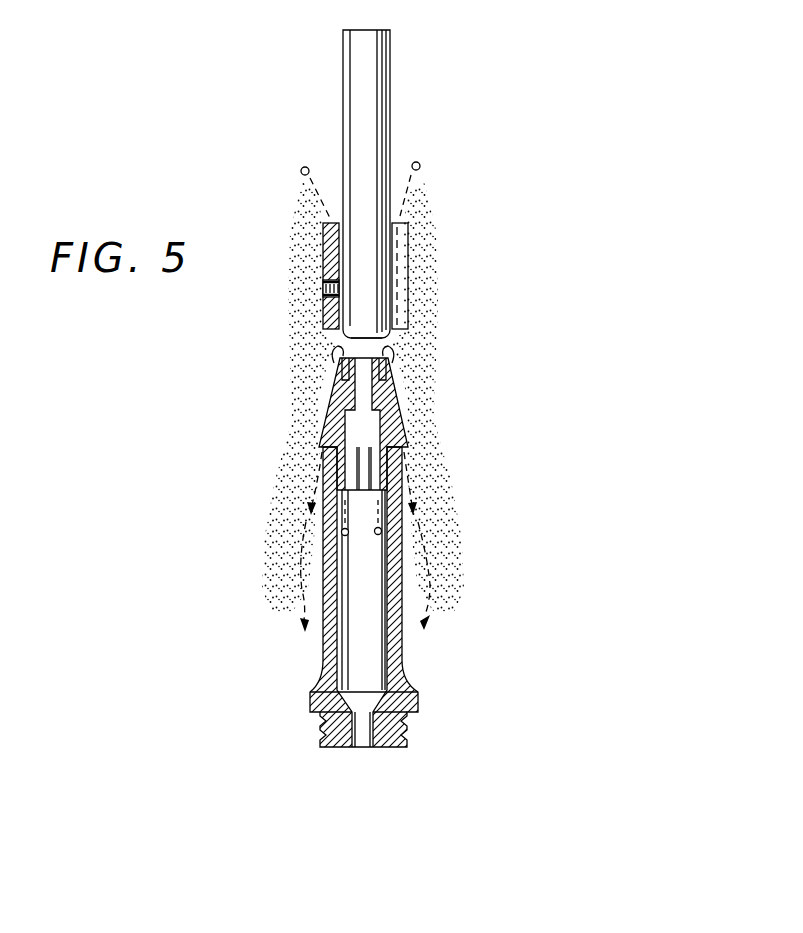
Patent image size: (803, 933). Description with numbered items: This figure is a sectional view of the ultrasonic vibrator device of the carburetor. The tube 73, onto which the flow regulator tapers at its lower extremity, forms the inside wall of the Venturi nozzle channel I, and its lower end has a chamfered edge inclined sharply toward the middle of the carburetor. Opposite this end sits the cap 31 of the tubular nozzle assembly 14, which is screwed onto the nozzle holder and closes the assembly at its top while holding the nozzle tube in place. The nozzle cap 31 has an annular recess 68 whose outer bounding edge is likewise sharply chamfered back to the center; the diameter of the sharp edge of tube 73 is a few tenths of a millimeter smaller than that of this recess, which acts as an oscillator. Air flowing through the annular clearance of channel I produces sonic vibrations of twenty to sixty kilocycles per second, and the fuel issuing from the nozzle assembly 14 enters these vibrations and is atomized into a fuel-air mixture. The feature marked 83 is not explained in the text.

The tube 73 is at (378, 100).
The nozzle channel I is at (405, 252).
The tube outlet 83 is at (393, 338).
The annular recess 68 is at (386, 372).
The cap 31 is at (404, 448).
The nozzle assembly 14 is at (410, 693).